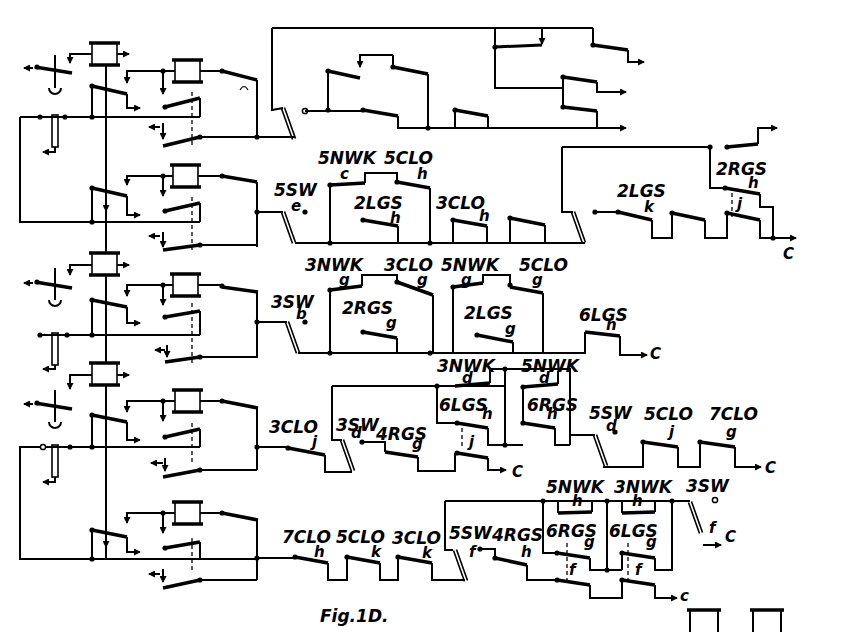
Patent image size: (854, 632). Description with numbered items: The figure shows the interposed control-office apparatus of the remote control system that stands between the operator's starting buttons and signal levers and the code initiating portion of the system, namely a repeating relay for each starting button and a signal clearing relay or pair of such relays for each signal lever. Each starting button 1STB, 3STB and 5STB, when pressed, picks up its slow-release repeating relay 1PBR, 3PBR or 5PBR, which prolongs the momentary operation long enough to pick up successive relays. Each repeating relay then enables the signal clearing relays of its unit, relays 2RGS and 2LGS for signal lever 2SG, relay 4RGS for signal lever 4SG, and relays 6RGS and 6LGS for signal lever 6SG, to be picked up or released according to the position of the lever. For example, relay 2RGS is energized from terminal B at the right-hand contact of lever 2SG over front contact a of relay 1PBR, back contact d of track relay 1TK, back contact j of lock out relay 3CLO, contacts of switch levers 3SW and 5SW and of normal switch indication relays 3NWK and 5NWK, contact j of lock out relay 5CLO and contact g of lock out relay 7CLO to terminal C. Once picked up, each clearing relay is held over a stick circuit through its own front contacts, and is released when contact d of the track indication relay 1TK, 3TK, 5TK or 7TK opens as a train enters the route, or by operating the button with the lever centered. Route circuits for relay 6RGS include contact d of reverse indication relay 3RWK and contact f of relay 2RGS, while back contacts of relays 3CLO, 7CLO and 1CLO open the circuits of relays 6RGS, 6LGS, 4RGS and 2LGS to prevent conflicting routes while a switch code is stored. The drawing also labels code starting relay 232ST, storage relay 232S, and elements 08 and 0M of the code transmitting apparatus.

The starting button 5STB is at (42, 63).
The repeating relay 5PBR is at (113, 138).
The signal lever 6SG is at (46, 128).
The signal clearing relay 6RGS is at (192, 93).
The track indication relay 5TK is at (257, 143).
The switch lever 5SW is at (317, 84).
The reverse switch indication relay 3RWK is at (355, 73).
The code lock out relay 3CLO is at (411, 82).
The signal clearing relay 2RGS is at (362, 280).
The code lock out relay 7CLO is at (461, 105).
The normal switch indication relay 5NWK is at (527, 58).
The signal clearing relay 2LGS is at (383, 321).
The code lock out relay 5CLO is at (624, 44).
The signal clearing relay 6LGS is at (192, 198).
The signal clearing relay 4RGS is at (340, 279).
The switch lever 3SW is at (591, 198).
The code lock out relay 1CLO is at (699, 212).
The normal switch indication relay 3NWK is at (750, 129).
The starting button 3STB is at (42, 277).
The repeating relay 3PBR is at (113, 299).
The signal lever 4SG is at (44, 342).
The track indication relay 3TK is at (242, 304).
The starting button 1STB is at (42, 399).
The repeating relay 1PBR is at (113, 452).
The signal lever 2SG is at (50, 465).
The track indication relay 1TK is at (243, 420).
The track indication relay 7TK is at (243, 531).
The code starting relay 232ST is at (534, 624).
The storage relay 232S is at (600, 624).
The relay 08 is at (704, 610).
The relay 0M is at (766, 610).